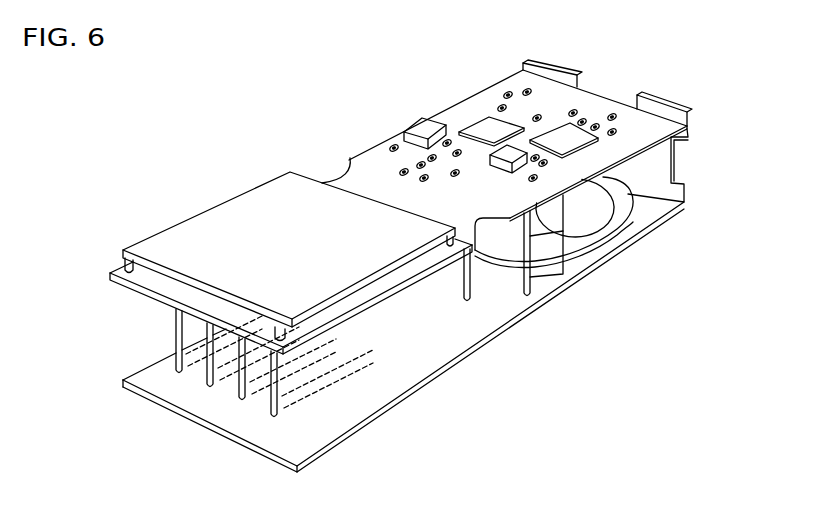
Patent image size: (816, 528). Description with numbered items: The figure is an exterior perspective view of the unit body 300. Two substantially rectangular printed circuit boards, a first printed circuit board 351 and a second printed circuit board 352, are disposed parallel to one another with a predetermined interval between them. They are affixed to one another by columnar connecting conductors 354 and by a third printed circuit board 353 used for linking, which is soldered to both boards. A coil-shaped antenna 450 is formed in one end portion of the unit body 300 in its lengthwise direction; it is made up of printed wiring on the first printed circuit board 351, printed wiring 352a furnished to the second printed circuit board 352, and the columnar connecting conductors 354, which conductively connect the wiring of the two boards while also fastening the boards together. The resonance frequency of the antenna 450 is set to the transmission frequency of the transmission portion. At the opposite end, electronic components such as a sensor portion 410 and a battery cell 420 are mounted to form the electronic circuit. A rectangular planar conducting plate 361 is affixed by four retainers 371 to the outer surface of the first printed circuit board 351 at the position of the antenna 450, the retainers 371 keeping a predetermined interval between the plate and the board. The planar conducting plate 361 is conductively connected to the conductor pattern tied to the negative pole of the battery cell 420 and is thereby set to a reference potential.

The unit body 300 is at (303, 138).
The first printed circuit board 351 is at (457, 118).
The second printed circuit board 352 is at (517, 302).
The printed wiring 352a is at (320, 399).
The third printed circuit board 353 is at (657, 175).
The columnar connecting conductors 354 is at (272, 415).
The planar conducting plate 361 is at (228, 220).
The retainers 371 is at (128, 261).
The sensor portion 410 is at (419, 128).
The battery cell 420 is at (578, 203).
The antenna 450 is at (399, 371).